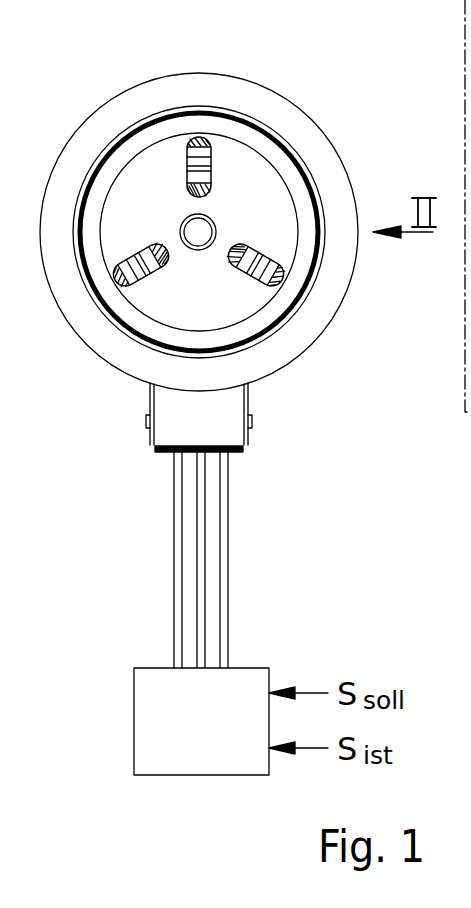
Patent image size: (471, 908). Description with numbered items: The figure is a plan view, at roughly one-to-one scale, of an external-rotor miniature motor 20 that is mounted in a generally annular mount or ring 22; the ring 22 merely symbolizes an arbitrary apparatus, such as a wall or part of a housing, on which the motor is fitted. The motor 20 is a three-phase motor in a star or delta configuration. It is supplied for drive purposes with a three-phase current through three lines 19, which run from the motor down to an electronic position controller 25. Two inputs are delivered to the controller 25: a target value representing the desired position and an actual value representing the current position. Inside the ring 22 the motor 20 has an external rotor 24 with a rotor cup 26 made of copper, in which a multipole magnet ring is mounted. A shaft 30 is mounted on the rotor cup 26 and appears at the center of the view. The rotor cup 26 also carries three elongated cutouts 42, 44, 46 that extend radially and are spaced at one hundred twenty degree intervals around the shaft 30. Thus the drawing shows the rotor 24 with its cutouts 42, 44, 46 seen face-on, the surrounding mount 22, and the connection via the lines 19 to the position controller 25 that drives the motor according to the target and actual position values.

The lines 19 is at (180, 602).
The miniature motor 20 is at (158, 138).
The mount or ring 22 is at (283, 112).
The external rotor 24 is at (256, 197).
The electronic position controller 25 is at (216, 742).
The rotor cup 26 is at (223, 155).
The shaft 30 is at (196, 240).
The elongated cutout 42 is at (152, 250).
The elongated cutout 44 is at (187, 175).
The elongated cutout 46 is at (248, 250).